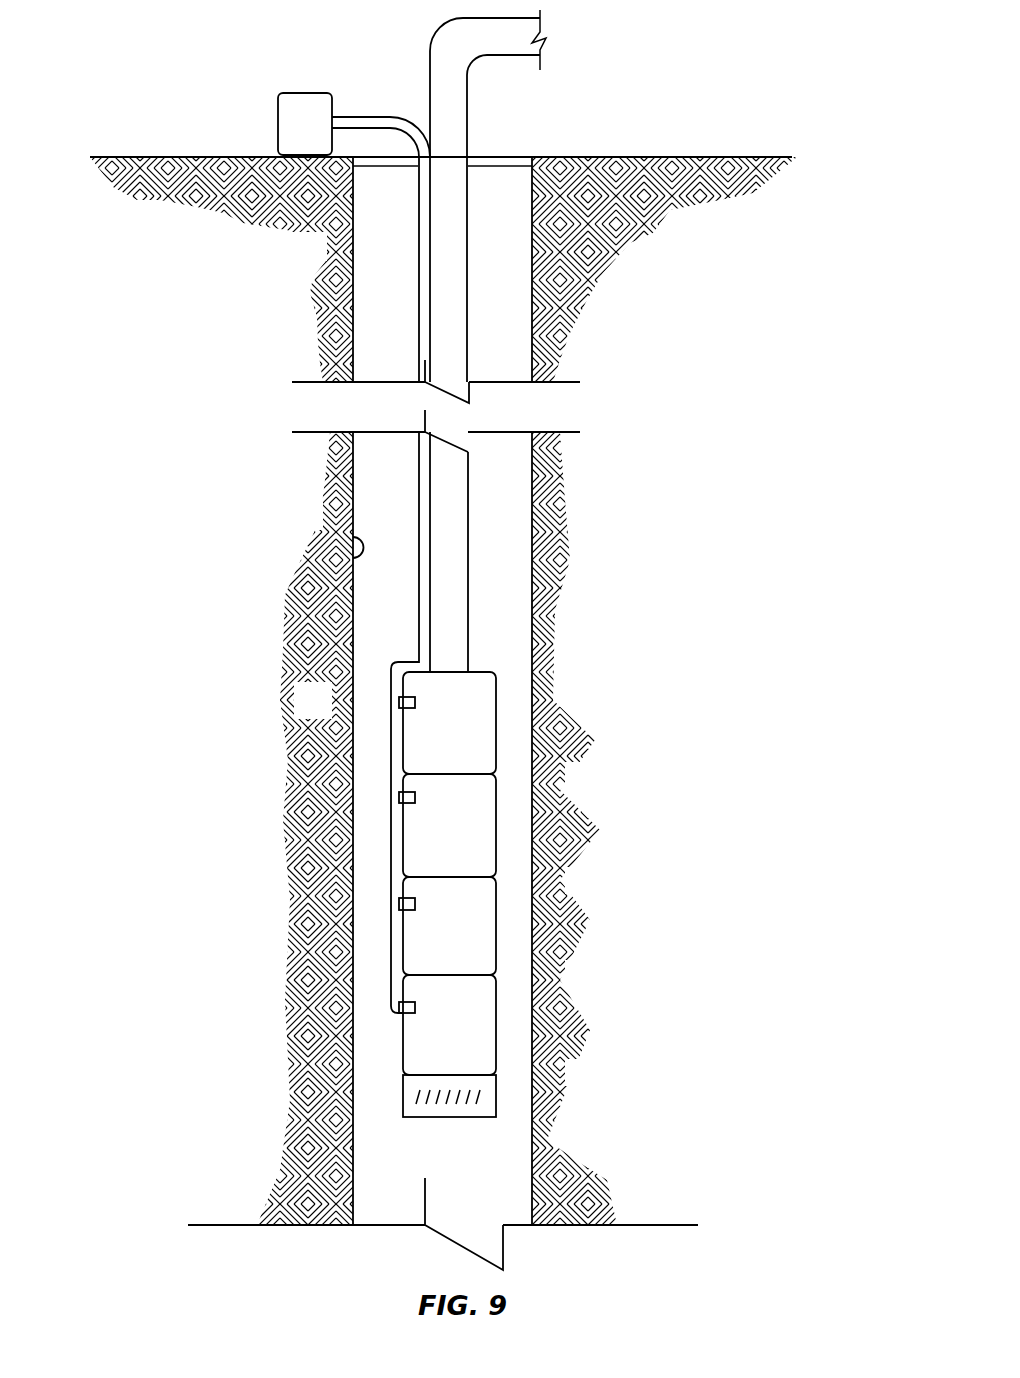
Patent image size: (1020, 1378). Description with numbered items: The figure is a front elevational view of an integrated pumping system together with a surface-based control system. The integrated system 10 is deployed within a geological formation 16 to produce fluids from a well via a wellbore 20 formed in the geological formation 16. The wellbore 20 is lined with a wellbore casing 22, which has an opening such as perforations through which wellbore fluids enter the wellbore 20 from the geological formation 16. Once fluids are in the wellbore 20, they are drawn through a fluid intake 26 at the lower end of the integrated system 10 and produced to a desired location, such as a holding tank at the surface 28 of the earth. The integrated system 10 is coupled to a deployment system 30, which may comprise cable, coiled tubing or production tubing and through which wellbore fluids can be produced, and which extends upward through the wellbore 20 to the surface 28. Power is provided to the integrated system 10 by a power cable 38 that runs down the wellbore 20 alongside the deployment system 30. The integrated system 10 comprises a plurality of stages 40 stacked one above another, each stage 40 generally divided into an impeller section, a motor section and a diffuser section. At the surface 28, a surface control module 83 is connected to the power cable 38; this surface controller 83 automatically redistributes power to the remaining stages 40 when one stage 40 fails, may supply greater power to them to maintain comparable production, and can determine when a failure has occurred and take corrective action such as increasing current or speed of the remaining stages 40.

The integrated system 10 is at (520, 680).
The geological formation 16 is at (326, 715).
The wellbore 20 is at (370, 493).
The wellbore casing 22 is at (353, 537).
The fluid intake 26 is at (497, 1095).
The surface 28 is at (680, 157).
The deployment system 30 is at (468, 540).
The power cable 38 is at (418, 305).
The stage 40 is at (475, 726).
The surface control module 83 is at (302, 100).